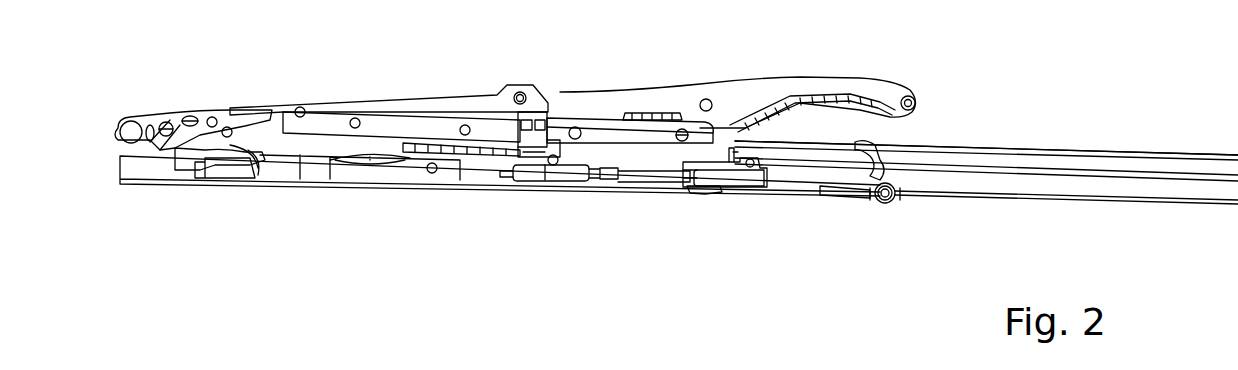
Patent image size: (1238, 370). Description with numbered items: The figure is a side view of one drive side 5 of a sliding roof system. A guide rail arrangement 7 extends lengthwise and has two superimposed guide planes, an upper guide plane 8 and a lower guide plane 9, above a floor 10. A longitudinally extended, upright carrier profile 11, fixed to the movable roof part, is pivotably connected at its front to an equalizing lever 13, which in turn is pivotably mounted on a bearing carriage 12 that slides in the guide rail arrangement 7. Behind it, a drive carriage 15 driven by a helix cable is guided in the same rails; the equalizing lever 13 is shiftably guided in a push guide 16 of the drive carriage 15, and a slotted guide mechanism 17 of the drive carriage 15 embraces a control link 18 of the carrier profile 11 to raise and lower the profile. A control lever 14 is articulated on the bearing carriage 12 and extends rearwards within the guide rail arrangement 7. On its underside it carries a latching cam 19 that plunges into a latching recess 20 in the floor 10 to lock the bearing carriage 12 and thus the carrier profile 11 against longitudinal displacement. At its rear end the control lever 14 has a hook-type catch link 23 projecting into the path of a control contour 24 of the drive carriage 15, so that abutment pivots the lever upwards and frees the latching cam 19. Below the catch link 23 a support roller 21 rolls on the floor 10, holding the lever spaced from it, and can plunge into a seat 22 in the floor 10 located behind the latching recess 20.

The drive side 5 is at (425, 201).
The guide rail arrangement 7 is at (1021, 146).
The upper guide plane 8 is at (1092, 163).
The lower guide plane 9 is at (1100, 188).
The floor 10 is at (1012, 188).
The carrier profile 11 is at (425, 110).
The bearing carriage 12 is at (227, 158).
The equalizing lever 13 is at (272, 110).
The control lever 14 is at (355, 170).
The drive carriage 15 is at (637, 163).
The push guide 16 is at (547, 112).
The slotted guide mechanism 17 is at (648, 113).
The control link 18 is at (748, 100).
The latching cam 19 is at (700, 192).
The latching recess 20 is at (722, 190).
The support roller 21 is at (892, 200).
The seat 22 is at (862, 192).
The catch link 23 is at (862, 150).
The control contour 24 is at (736, 152).